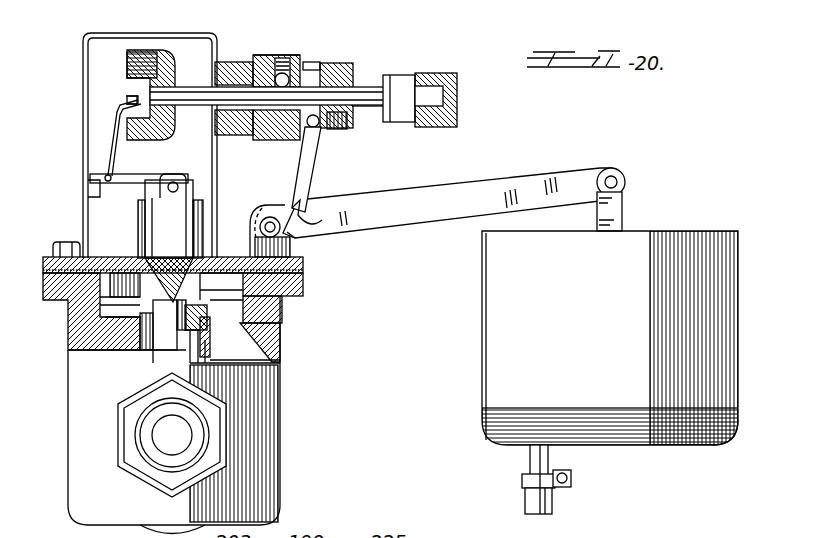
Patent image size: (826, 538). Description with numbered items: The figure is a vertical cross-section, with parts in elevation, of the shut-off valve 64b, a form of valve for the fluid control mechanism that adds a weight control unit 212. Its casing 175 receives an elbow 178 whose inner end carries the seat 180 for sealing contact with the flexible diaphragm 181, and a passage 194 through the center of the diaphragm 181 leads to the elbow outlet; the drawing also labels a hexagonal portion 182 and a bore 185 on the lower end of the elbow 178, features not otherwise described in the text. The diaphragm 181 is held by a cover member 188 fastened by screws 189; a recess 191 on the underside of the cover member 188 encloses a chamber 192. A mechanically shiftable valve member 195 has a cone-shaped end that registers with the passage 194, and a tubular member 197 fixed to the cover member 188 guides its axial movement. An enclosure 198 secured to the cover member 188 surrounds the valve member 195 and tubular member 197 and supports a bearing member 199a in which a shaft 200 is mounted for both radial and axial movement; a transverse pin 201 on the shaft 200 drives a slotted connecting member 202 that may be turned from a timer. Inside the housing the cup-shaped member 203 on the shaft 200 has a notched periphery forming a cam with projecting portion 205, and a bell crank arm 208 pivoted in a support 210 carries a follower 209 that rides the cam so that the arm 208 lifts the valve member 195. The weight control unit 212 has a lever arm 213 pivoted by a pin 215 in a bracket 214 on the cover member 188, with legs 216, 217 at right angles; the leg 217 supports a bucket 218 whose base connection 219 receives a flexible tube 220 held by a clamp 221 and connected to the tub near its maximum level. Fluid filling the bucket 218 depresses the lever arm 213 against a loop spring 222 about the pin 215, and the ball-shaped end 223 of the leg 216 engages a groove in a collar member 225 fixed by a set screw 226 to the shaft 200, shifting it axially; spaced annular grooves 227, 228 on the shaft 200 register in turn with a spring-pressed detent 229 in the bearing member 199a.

The shut-off valve 64b is at (282, 392).
The casing 175 is at (272, 342).
The elbow 178 is at (138, 360).
The seat 180 is at (282, 323).
The flexible diaphragm 181 is at (75, 298).
The hexagonal nut 182 is at (202, 436).
The outlet bore 185 is at (165, 447).
The cover member 188 is at (303, 265).
The screws 189 is at (62, 240).
The recess 191 is at (230, 256).
The chamber 192 is at (303, 288).
The passage 194 is at (93, 340).
The valve member 195 is at (180, 208).
The tubular member 197 is at (145, 255).
The enclosure 198 is at (83, 150).
The bearing member 199a is at (270, 60).
The shaft 200 is at (355, 85).
The pin 201 is at (405, 78).
The connecting member 202 is at (450, 80).
The cup-shaped member 203 is at (158, 68).
The projecting portion 205 is at (128, 120).
The bell crank arm 208 is at (152, 166).
The follower 209 is at (130, 99).
The support 210 is at (95, 192).
The weight control unit 212 is at (672, 227).
The lever arm 213 is at (444, 196).
The bracket 214 is at (300, 235).
The pin 215 is at (273, 220).
The leg 216 is at (318, 170).
The leg 217 is at (548, 180).
The bucket 218 is at (715, 443).
The connection 219 is at (540, 456).
The flexible tube 220 is at (552, 506).
The clamp 221 is at (572, 478).
The loop spring 222 is at (323, 196).
The ball-shaped end 223 is at (308, 128).
The collar member 225 is at (353, 125).
The set screw 226 is at (337, 130).
The annular groove 227 is at (264, 136).
The annular groove 228 is at (213, 122).
The spring-pressed detent 229 is at (292, 60).